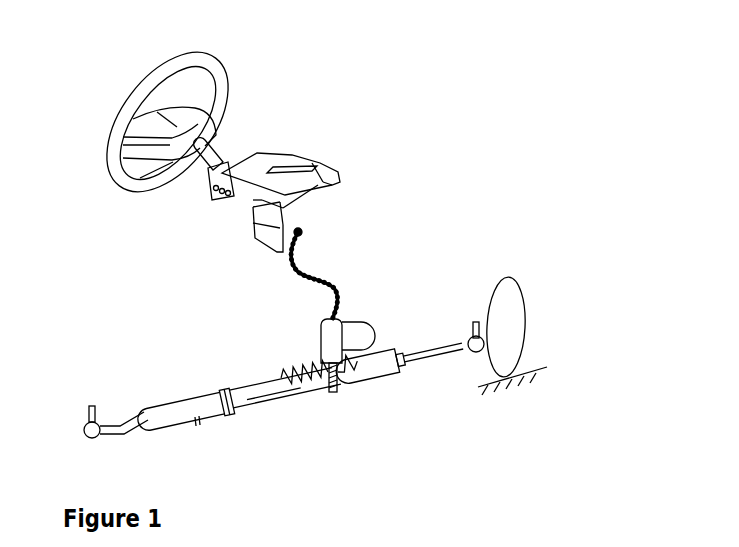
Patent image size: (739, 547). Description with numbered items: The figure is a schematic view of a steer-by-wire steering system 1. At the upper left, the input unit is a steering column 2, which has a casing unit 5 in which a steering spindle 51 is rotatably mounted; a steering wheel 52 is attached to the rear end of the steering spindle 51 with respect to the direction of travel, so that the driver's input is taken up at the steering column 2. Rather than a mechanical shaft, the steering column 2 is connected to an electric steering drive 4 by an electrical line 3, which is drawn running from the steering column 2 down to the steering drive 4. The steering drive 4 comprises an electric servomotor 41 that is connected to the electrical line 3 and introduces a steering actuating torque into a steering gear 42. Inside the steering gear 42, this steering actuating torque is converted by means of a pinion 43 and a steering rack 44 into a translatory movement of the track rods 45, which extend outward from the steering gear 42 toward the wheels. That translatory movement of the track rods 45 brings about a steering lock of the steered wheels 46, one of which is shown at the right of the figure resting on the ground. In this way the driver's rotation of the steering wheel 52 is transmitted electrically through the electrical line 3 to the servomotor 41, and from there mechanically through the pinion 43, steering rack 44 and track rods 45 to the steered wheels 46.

The steer-by-wire steering system 1 is at (425, 143).
The steering column 2 is at (320, 146).
The electrical line 3 is at (318, 283).
The electric steering drive 4 is at (333, 330).
The casing unit 5 is at (245, 193).
The electric servomotor 41 is at (368, 338).
The steering gear 42 is at (303, 357).
The pinion 43 is at (337, 390).
The steering rack 44 is at (300, 383).
The track rods 45 is at (137, 413).
The steered wheels 46 is at (513, 318).
The steering spindle 51 is at (212, 153).
The steering wheel 52 is at (220, 78).